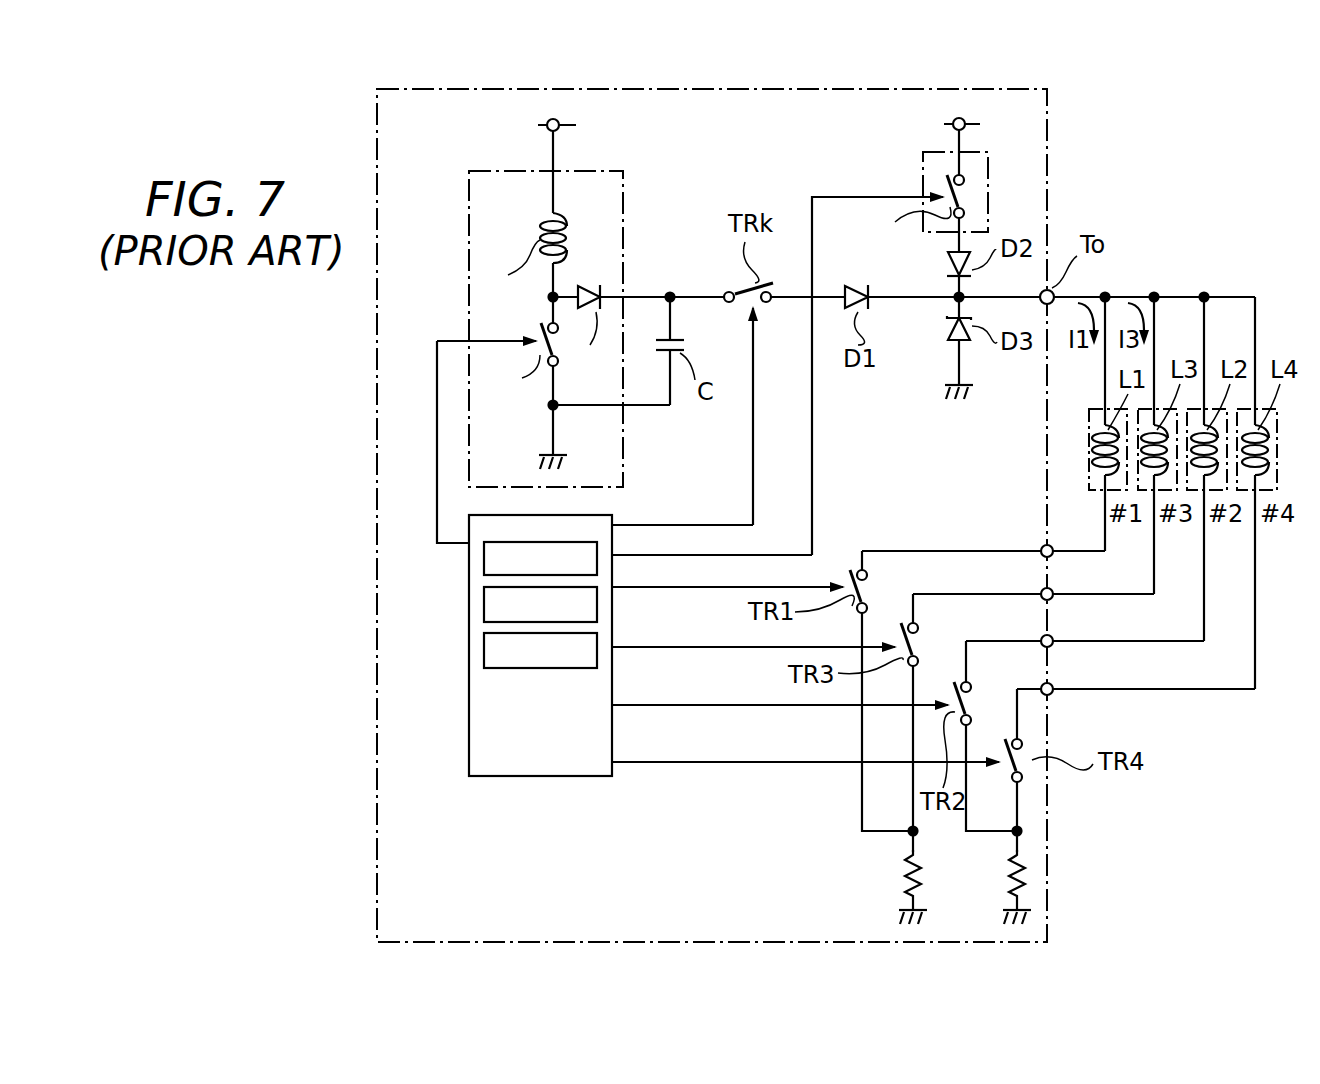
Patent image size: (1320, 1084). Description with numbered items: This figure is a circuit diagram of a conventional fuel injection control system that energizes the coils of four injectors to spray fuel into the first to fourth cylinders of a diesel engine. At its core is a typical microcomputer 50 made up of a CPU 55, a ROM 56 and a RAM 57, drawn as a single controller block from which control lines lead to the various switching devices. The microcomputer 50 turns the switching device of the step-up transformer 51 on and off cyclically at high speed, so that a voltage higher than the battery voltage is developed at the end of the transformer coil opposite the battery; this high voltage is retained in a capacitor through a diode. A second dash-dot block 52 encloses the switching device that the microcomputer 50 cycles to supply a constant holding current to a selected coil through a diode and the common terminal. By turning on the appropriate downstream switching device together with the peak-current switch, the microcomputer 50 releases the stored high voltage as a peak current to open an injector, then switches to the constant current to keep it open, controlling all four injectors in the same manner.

The microcomputer 50 is at (512, 681).
The step-up transformer 51 is at (469, 246).
The battery-side switch circuit 52 is at (988, 193).
The CPU 55 is at (484, 565).
The ROM 56 is at (484, 610).
The RAM 57 is at (484, 656).